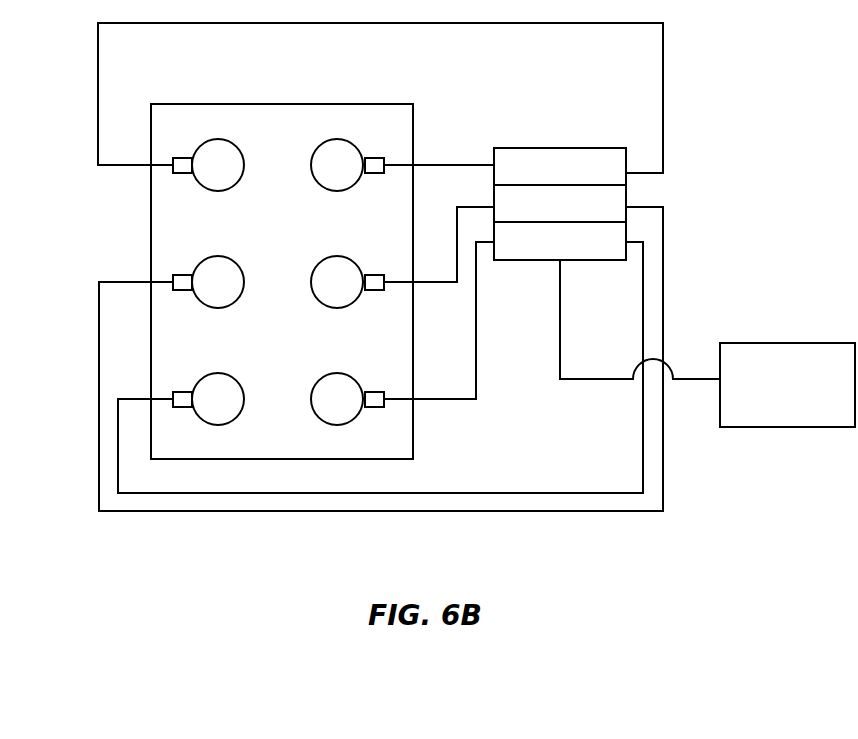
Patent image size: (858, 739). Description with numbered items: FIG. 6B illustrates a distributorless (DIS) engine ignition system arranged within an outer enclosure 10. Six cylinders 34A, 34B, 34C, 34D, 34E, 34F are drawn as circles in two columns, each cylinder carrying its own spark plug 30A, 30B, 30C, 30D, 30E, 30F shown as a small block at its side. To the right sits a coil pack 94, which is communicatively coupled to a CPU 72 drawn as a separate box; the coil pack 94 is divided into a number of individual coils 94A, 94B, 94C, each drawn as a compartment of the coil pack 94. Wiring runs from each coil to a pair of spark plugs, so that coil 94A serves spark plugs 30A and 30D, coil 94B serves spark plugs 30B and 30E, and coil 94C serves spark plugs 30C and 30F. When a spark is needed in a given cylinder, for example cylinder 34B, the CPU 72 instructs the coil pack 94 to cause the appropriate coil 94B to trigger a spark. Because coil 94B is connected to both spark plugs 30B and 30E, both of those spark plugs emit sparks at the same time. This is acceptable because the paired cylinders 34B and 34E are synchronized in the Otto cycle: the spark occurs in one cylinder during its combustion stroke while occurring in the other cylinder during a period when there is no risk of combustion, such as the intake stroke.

The device 10 is at (325, 92).
The spark plug 30A is at (386, 161).
The spark plug 30B is at (385, 291).
The spark plug 30C is at (385, 407).
The spark plug 30D is at (181, 157).
The spark plug 30E is at (181, 274).
The spark plug 30F is at (181, 391).
The cylinder 34A is at (333, 146).
The cylinder 34B is at (334, 259).
The cylinder 34C is at (334, 376).
The cylinder 34D is at (238, 147).
The cylinder 34E is at (238, 264).
The cylinder 34F is at (238, 381).
The coil pack 94 is at (560, 160).
The coil 94A is at (585, 177).
The coil 94B is at (585, 214).
The coil 94C is at (585, 251).
The CPU 72 is at (772, 409).